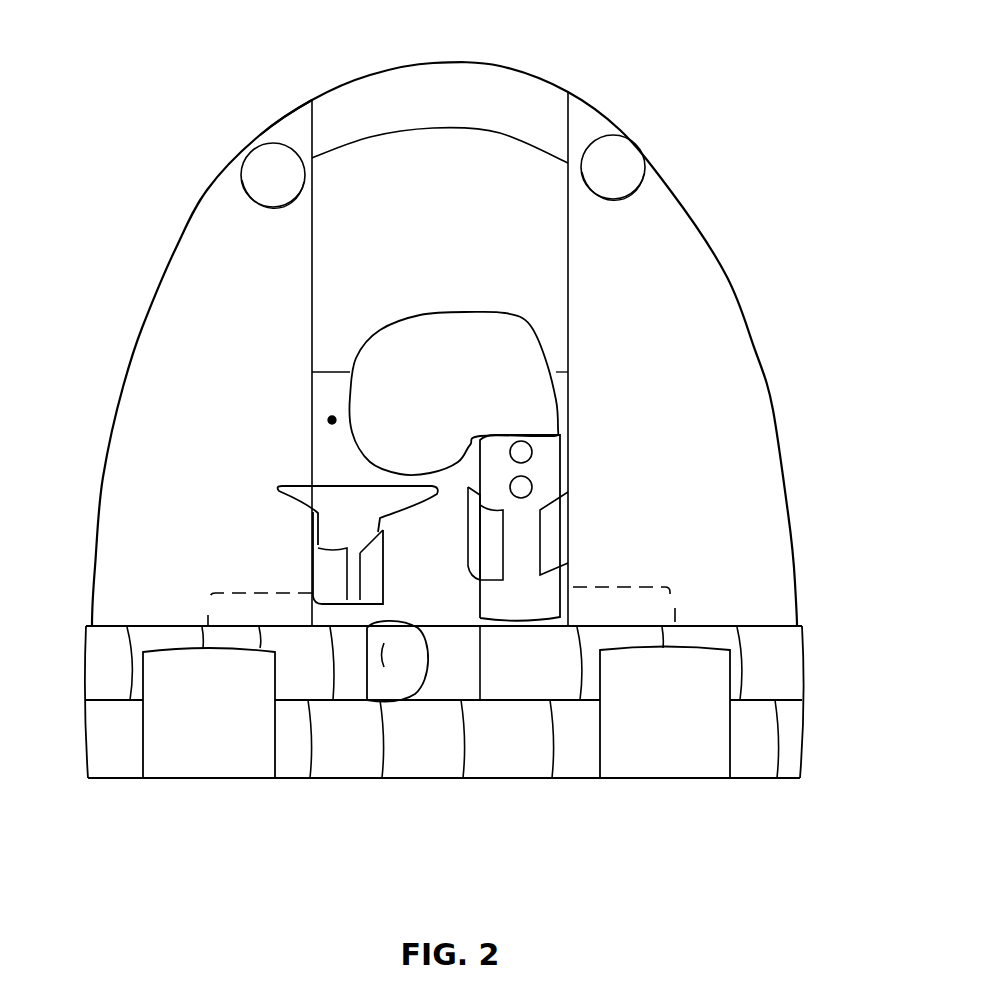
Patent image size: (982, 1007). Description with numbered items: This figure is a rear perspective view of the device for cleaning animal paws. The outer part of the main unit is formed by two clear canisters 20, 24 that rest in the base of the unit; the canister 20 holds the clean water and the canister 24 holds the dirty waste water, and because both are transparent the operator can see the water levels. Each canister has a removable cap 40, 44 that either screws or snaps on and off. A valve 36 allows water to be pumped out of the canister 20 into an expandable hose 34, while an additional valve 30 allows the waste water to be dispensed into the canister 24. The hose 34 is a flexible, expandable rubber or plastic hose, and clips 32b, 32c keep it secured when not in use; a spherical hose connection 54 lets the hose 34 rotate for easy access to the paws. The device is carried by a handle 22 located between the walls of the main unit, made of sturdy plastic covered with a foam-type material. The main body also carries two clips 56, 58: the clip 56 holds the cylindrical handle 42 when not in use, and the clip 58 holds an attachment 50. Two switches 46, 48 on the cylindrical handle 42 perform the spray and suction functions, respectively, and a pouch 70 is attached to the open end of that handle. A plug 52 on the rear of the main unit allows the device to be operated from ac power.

The canister 20 is at (598, 123).
The handle 22 is at (493, 85).
The canister 24 is at (295, 128).
The valve 30 is at (228, 602).
The clip 32b is at (213, 745).
The clip 32c is at (668, 748).
The expandable hose 34 is at (340, 750).
The valve 36 is at (637, 603).
The removable cap 40 is at (267, 168).
The cylindrical handle 42 is at (540, 461).
The removable cap 44 is at (620, 168).
The switch 46 is at (527, 450).
The switch 48 is at (528, 484).
The attachment 50 is at (337, 502).
The plug 52 is at (332, 420).
The spherical hose connection 54 is at (403, 677).
The clip 56 is at (552, 540).
The clip 58 is at (325, 568).
The pouch 70 is at (513, 365).